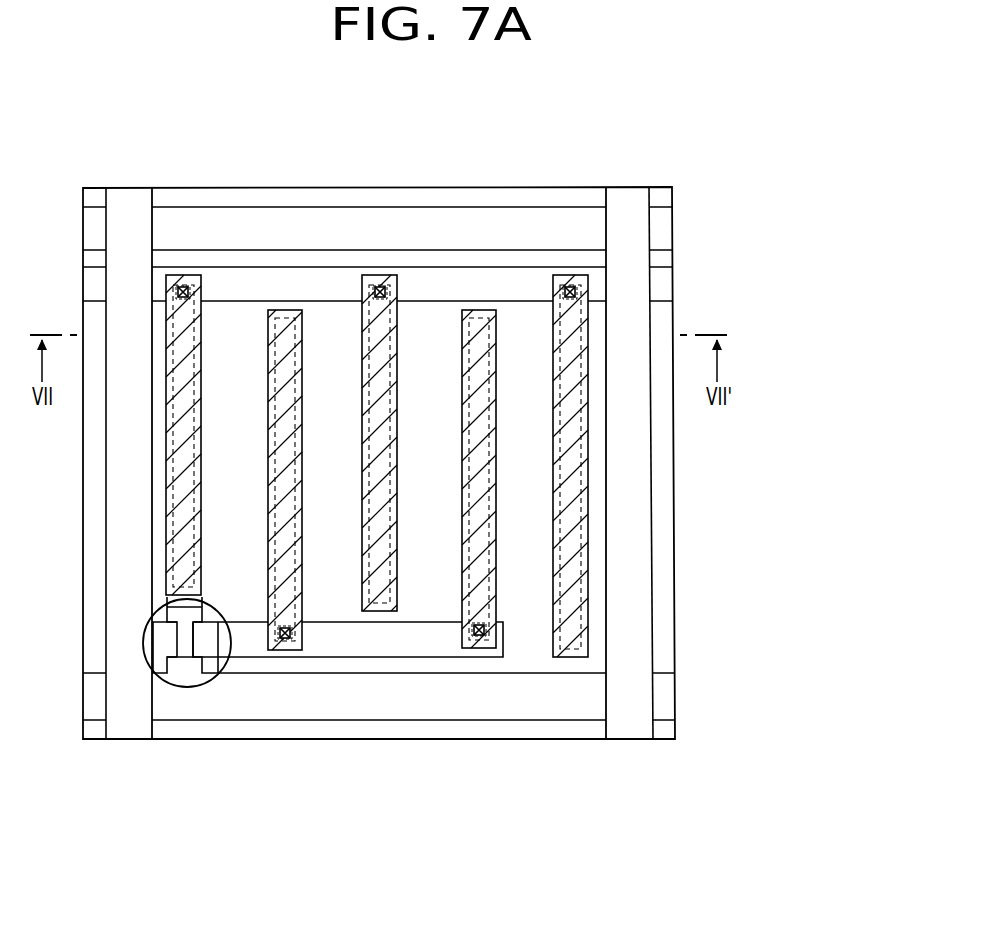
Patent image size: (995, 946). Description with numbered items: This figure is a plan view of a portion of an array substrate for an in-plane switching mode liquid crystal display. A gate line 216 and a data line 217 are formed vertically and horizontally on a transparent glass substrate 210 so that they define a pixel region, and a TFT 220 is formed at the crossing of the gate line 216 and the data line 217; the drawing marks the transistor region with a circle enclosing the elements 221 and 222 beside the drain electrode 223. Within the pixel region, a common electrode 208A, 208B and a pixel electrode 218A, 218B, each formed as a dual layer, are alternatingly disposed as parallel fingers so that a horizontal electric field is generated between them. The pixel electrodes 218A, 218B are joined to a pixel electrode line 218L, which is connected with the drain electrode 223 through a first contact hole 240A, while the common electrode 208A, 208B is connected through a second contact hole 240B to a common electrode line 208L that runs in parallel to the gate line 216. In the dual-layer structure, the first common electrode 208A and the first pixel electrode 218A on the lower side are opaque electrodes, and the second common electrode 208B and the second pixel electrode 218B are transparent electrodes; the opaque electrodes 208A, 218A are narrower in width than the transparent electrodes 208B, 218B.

The transparent glass substrate 210 is at (688, 182).
The common electrode line 208L is at (662, 275).
The first common electrode 208A is at (578, 525).
The second common electrode 208B is at (588, 558).
The first pixel electrode 218A is at (487, 432).
The second pixel electrode 218B is at (495, 463).
The pixel electrode line 218L is at (358, 642).
The data line 217 is at (638, 618).
The gate line 216 is at (552, 703).
The TFT 220 is at (145, 660).
The connection portion 221 is at (173, 605).
The first pad 222 is at (163, 648).
The drain electrode 223 is at (207, 645).
The first contact hole 240A is at (480, 636).
The second contact hole 240B is at (567, 283).